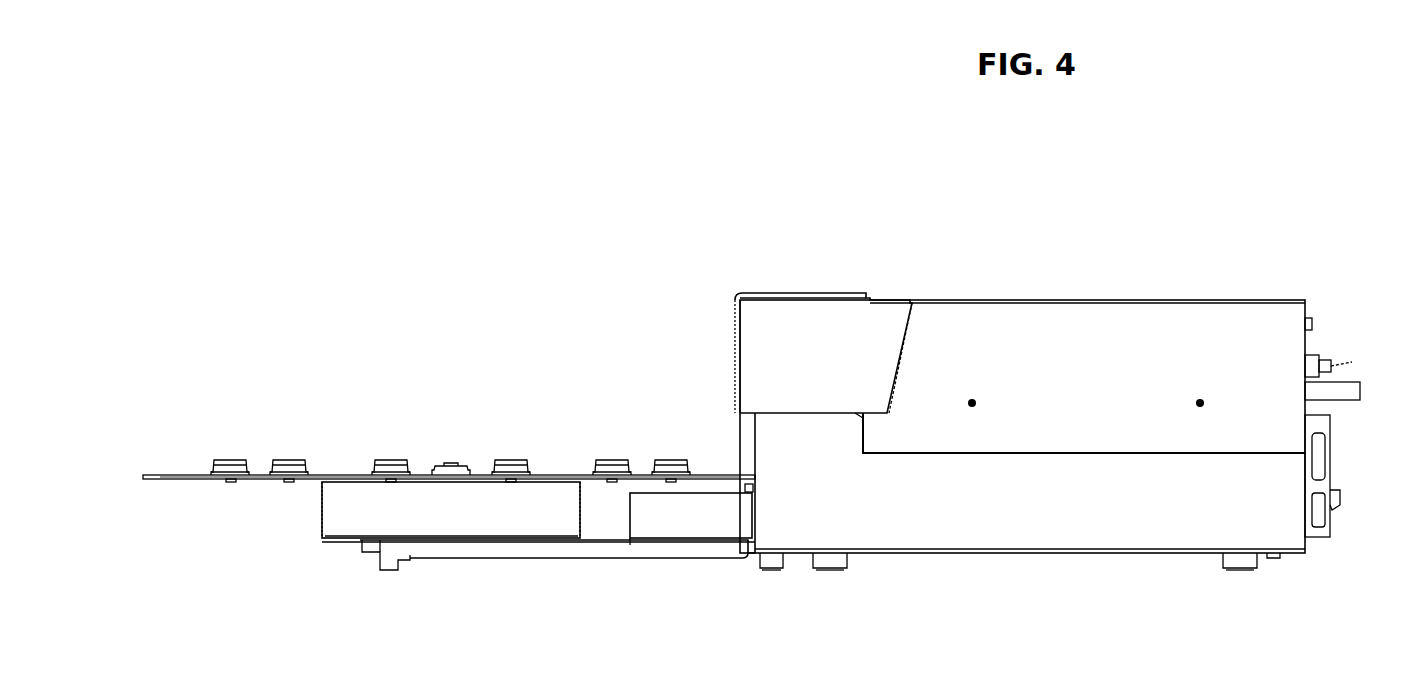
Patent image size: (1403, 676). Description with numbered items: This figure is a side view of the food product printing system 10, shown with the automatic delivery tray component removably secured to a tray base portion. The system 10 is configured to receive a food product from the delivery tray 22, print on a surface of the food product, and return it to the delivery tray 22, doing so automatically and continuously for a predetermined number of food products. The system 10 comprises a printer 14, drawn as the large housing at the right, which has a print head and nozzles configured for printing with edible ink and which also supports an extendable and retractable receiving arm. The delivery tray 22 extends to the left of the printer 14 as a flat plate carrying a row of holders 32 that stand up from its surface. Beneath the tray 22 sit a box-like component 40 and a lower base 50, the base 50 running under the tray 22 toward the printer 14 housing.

The printing system 10 is at (280, 216).
The printer 14 is at (705, 258).
The delivery tray 22 is at (338, 444).
The sample holder 32 is at (228, 460).
The module box 40 is at (305, 529).
The base 50 is at (543, 569).